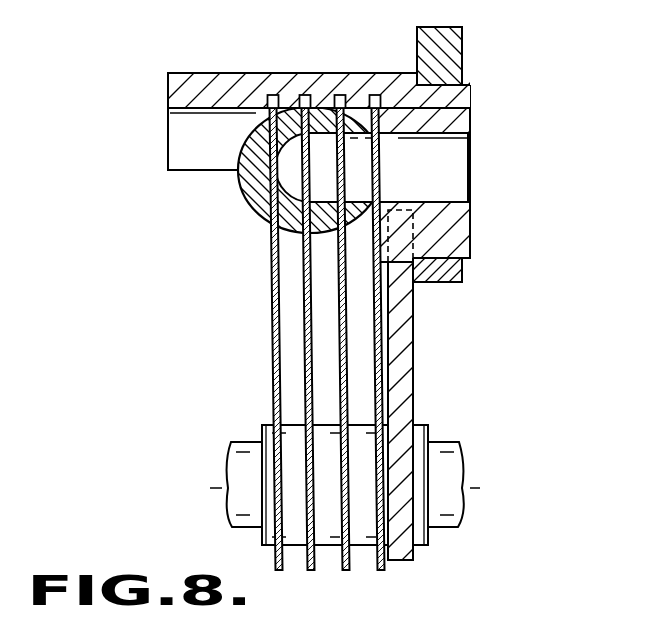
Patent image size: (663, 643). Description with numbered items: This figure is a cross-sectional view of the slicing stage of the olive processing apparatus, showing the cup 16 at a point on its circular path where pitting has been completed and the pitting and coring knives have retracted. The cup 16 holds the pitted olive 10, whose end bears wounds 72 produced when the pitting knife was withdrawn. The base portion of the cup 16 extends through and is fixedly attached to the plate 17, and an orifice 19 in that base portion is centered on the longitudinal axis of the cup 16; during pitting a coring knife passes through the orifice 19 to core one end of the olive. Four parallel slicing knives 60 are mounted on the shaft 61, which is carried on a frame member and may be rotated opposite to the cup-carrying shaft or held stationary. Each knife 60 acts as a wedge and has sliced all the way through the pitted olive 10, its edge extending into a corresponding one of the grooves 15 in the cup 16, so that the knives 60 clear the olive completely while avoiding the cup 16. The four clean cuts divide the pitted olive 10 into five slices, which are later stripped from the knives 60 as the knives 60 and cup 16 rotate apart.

The pitted olive 10 is at (250, 203).
The grooves 15 is at (306, 95).
The cup 16 is at (203, 73).
The plate 17 is at (463, 43).
The orifice 19 is at (453, 153).
The slicing knives 60 is at (307, 297).
The shaft 61 is at (248, 437).
The wounds 72 is at (240, 186).